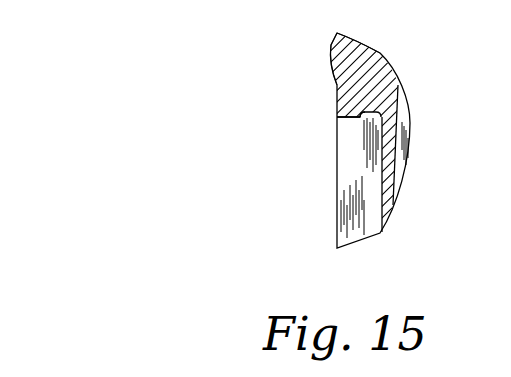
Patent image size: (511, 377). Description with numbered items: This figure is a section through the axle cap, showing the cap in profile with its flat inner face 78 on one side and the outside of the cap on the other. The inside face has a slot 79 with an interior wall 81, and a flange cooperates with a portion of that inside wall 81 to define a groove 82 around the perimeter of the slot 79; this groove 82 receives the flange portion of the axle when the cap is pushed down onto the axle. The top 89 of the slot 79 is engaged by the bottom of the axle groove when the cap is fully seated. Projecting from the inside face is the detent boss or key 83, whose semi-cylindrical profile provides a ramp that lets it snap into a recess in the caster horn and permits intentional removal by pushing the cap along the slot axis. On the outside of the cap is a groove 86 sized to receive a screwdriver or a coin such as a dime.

The slot 79 is at (301, 239).
The detent boss or key 83 is at (328, 60).
The groove 86 is at (402, 118).
The flat inner face 78 is at (337, 185).
The top of the slot 89 is at (363, 115).
The groove 82 is at (362, 127).
The interior wall 81 is at (373, 220).